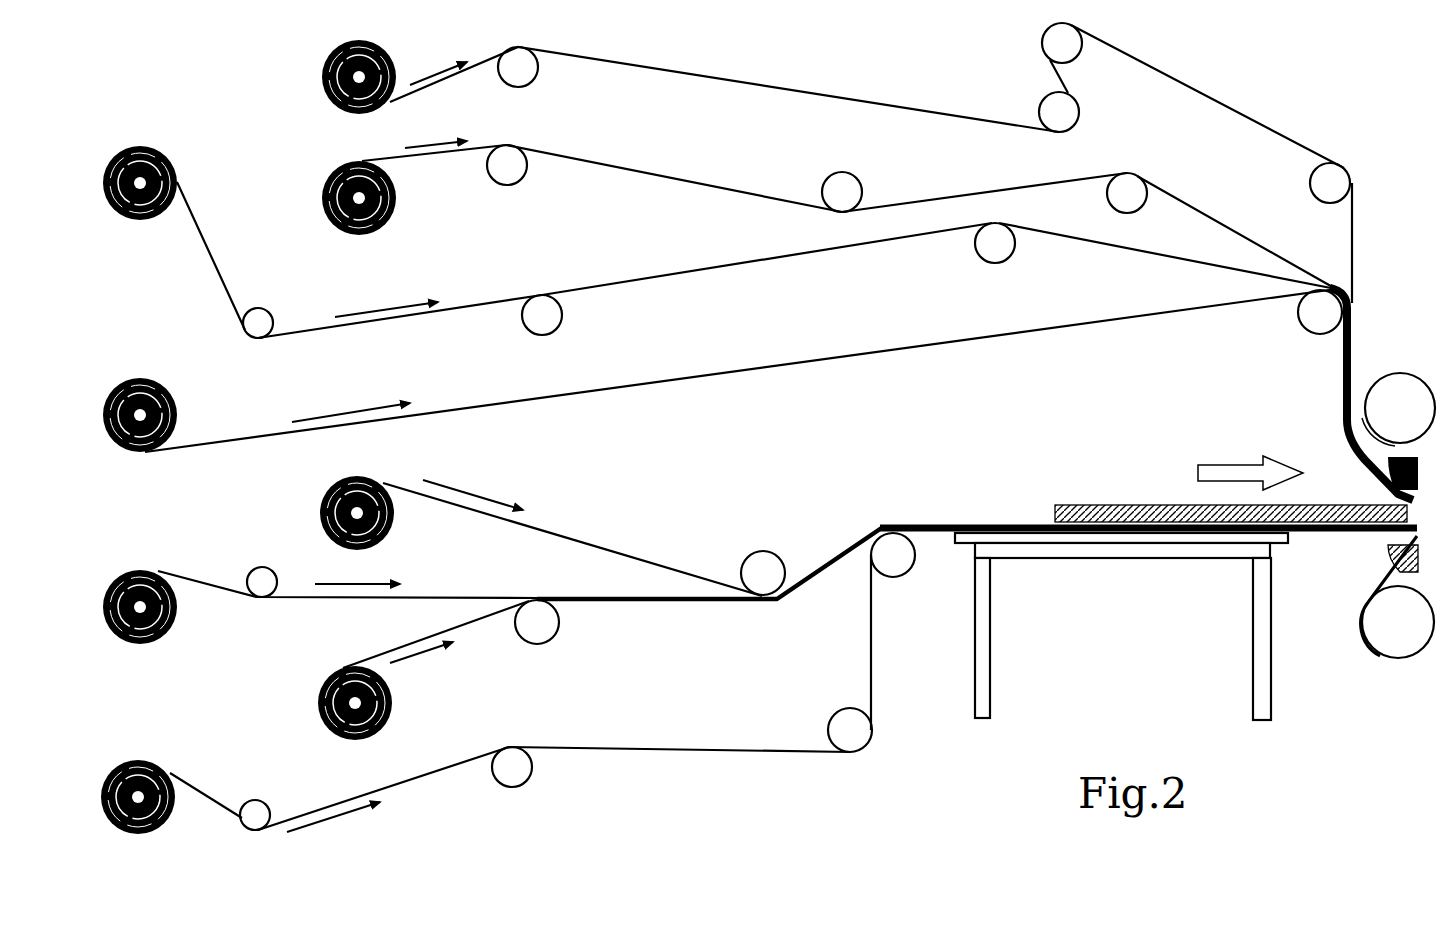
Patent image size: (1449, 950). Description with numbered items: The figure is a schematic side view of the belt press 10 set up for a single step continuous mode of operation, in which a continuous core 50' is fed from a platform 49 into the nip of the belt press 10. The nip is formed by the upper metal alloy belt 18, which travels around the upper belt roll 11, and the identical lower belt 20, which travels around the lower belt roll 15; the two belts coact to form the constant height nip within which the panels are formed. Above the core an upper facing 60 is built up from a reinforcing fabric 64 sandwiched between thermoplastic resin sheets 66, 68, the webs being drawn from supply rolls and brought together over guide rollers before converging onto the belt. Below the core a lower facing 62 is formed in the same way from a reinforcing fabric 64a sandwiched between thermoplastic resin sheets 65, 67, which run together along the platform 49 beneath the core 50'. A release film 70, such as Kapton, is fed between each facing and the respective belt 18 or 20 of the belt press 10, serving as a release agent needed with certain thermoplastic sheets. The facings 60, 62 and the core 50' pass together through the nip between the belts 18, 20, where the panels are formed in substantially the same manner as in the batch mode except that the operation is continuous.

The belt press 10 is at (1415, 225).
The belt roll 11 is at (1400, 408).
The belt roll 15 is at (1398, 622).
The metal alloy belt 18 is at (1381, 370).
The belt 20 is at (1373, 660).
The platform 49 is at (1098, 553).
The continuous core 50' is at (1231, 482).
The upper facing 60 is at (1330, 361).
The lower facing 62 is at (805, 550).
The reinforcing fabric 64 is at (465, 305).
The reinforcing fabric 64a is at (433, 597).
The thermoplastic resin sheet 65 is at (580, 542).
The thermoplastic resin sheet 66 is at (742, 192).
The thermoplastic resin sheet 67 is at (473, 627).
The thermoplastic resin sheet 68 is at (655, 387).
The release film 70 is at (823, 93).